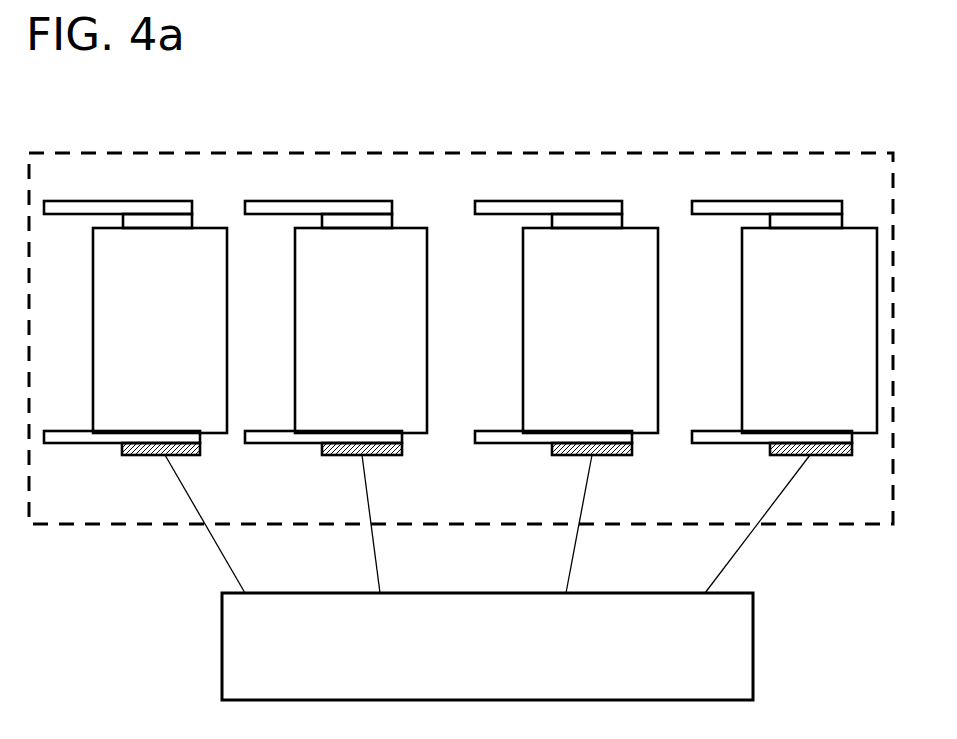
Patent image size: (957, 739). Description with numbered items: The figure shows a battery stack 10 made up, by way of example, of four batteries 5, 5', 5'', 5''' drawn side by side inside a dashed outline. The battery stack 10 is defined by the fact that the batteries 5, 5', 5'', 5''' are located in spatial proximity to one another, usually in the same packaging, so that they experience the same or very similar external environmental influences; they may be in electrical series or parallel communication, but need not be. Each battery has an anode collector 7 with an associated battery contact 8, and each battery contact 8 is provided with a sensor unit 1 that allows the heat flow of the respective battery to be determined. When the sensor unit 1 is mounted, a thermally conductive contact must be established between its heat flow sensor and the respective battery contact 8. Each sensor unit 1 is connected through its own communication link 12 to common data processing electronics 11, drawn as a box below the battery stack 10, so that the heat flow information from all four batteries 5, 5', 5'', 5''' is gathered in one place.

The battery stack 10 is at (310, 152).
The battery 5 is at (130, 405).
The battery 5' is at (336, 328).
The battery 5'' is at (566, 328).
The battery 5''' is at (784, 328).
The battery contact 8 is at (75, 438).
The anode collector 7 is at (168, 441).
The sensor unit 1 is at (185, 455).
The data processing electronics 11 is at (456, 674).
The communication link 12 is at (745, 535).